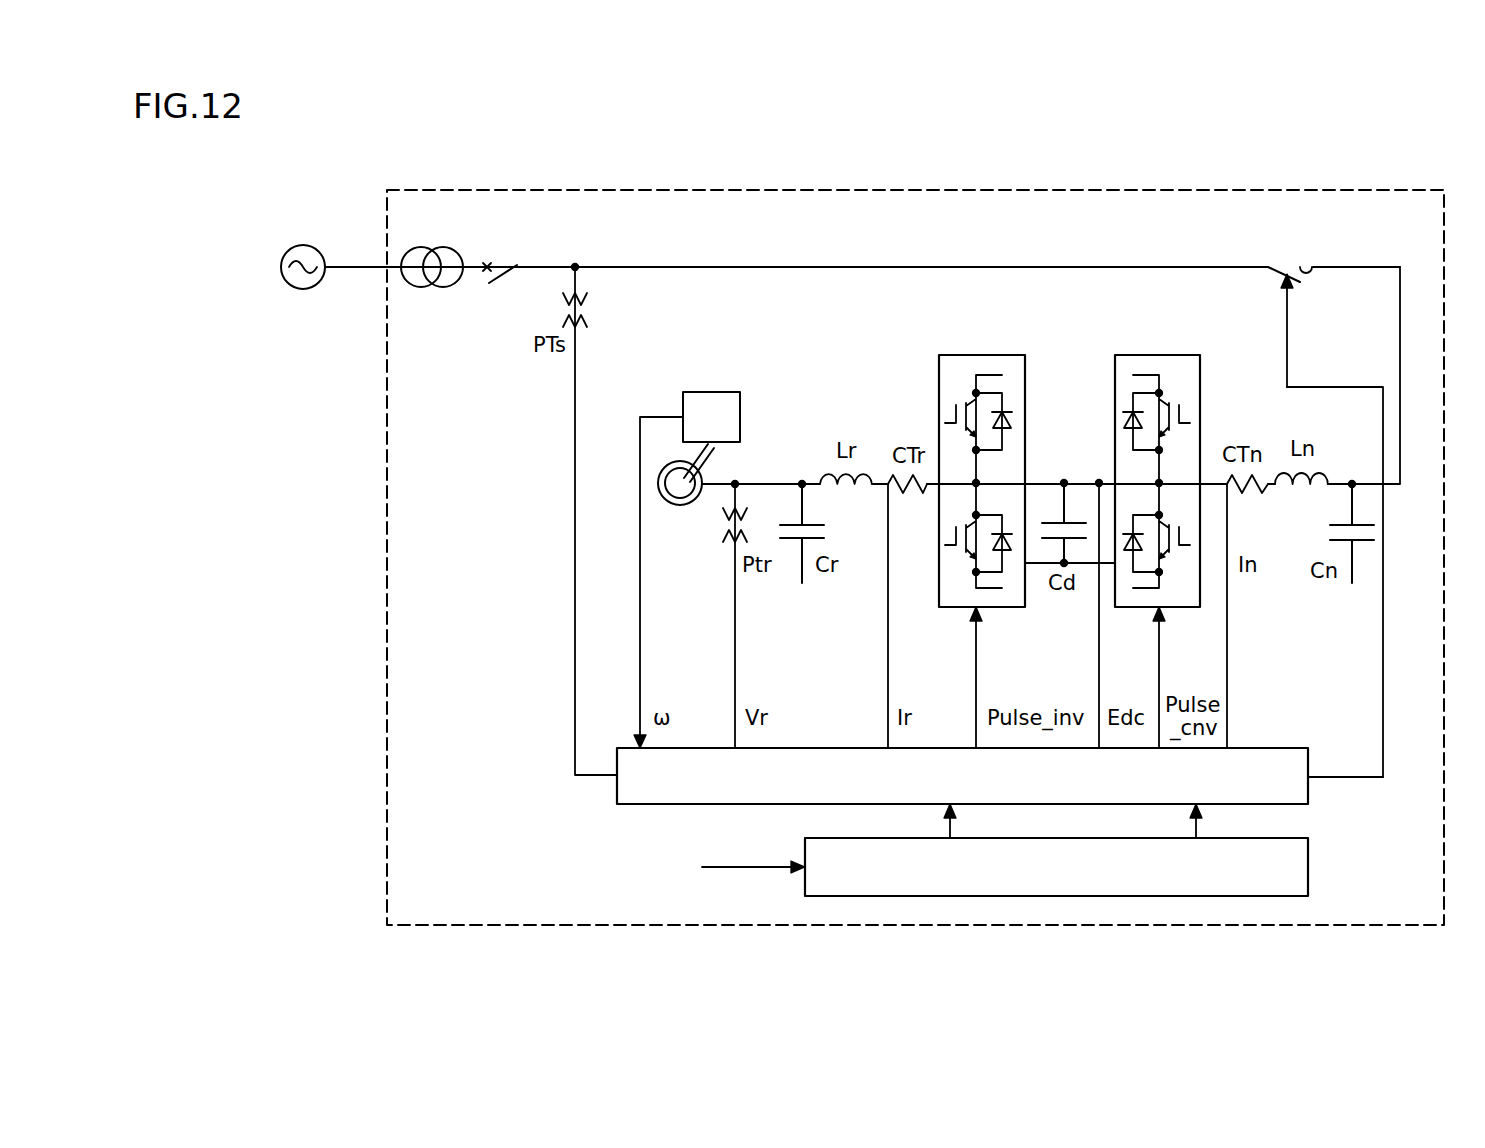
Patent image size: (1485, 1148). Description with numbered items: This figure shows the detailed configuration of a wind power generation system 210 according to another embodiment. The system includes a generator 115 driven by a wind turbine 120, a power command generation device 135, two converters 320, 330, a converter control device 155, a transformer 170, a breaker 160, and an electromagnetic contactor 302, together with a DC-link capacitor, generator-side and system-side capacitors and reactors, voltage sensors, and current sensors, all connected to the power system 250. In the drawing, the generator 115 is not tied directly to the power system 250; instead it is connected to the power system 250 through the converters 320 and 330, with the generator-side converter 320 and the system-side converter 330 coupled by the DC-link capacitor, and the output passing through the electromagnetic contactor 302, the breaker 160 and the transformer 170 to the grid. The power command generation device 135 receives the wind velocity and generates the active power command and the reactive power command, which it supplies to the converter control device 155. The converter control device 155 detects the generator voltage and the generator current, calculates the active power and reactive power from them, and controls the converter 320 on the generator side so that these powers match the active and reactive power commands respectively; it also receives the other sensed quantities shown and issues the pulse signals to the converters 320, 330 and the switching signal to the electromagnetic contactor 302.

The wind power generation system 210 is at (877, 190).
The power system 250 is at (305, 245).
The transformer 170 is at (424, 288).
The breaker 160 is at (503, 269).
The wind turbine 120 is at (712, 392).
The generator 115 is at (675, 506).
The converter 320 is at (937, 362).
The converter 330 is at (1200, 379).
The electromagnetic contactor 302 is at (1335, 294).
The converter control device 155 is at (1310, 790).
The power command generation device 135 is at (1308, 864).